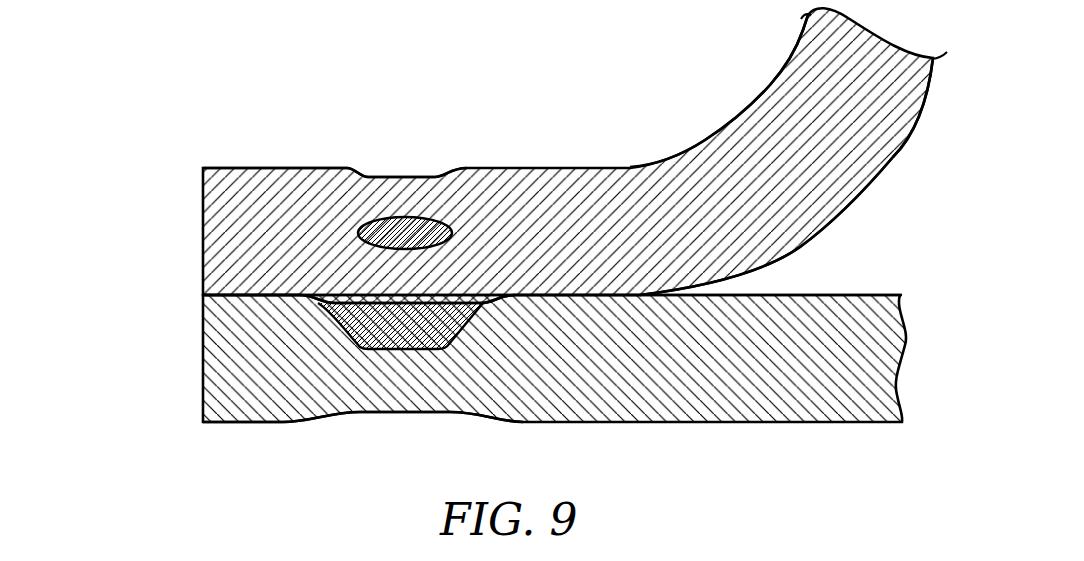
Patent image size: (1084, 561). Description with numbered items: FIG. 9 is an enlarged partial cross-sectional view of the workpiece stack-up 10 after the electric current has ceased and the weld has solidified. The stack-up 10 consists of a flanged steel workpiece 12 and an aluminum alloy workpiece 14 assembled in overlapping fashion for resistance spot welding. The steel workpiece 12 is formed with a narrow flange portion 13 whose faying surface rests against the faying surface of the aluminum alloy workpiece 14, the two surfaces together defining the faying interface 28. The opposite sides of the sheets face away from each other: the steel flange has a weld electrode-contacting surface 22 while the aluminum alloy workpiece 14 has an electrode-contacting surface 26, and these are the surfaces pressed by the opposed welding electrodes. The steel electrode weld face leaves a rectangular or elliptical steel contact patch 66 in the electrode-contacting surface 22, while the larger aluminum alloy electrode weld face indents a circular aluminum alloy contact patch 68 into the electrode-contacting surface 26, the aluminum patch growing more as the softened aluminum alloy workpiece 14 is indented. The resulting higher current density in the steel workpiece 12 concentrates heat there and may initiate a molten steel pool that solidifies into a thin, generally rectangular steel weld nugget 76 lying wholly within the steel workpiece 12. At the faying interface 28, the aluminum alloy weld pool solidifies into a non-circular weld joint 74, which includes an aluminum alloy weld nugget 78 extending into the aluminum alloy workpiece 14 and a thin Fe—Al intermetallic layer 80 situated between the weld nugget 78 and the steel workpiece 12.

The workpiece stack-up 10 is at (160, 215).
The steel workpiece 12 is at (808, 95).
The narrow flange portion 13 is at (237, 167).
The aluminum alloy workpiece 14 is at (803, 322).
The weld electrode-contacting surface 22 is at (275, 167).
The electrode-contacting surface 26 is at (232, 422).
The faying interface 28 is at (231, 295).
The steel contact patch 66 is at (395, 176).
The aluminum alloy contact patch 68 is at (377, 413).
The weld joint 74 is at (283, 285).
The steel weld nugget 76 is at (418, 228).
The aluminum alloy weld nugget 78 is at (430, 330).
The Fe—Al intermetallic layer 80 is at (445, 300).